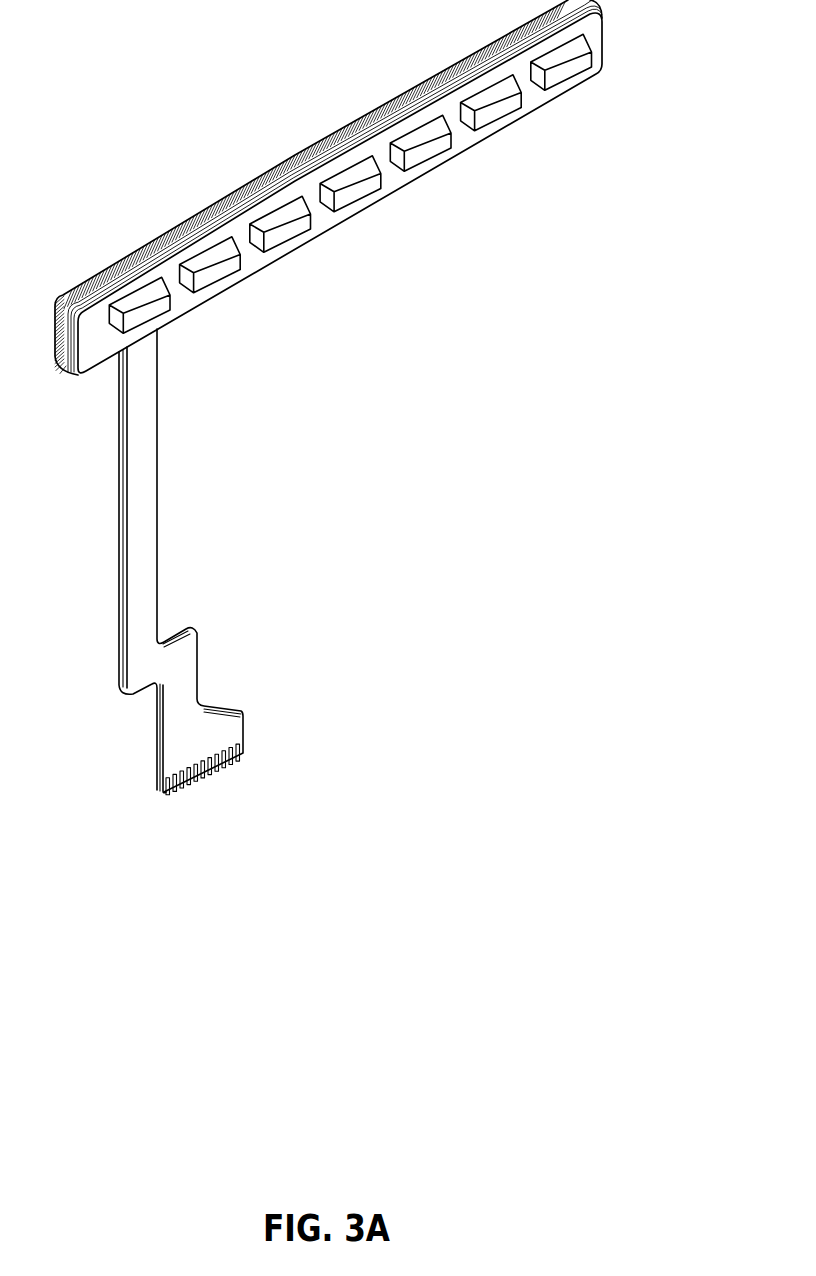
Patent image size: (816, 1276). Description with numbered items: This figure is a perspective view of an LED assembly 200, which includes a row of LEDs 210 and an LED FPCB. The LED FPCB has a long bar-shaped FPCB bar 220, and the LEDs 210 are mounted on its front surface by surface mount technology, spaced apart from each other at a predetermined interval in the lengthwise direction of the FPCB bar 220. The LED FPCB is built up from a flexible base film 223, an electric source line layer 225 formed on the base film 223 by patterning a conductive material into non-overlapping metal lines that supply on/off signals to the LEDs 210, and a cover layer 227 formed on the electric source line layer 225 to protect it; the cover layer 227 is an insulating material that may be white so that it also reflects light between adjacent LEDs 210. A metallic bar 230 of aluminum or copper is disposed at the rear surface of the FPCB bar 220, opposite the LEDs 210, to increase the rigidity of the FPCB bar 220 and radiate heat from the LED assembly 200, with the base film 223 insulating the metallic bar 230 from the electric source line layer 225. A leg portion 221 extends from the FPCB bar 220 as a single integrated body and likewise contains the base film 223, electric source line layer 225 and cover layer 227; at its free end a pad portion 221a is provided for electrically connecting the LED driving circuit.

The LED assembly 200 is at (207, 85).
The LEDs 210 is at (430, 152).
The FPCB bar 220 is at (387, 180).
The leg portion 221 is at (142, 528).
The pad portion 221a is at (223, 767).
The flexible base film 223 is at (121, 418).
The electric source line layer 225 is at (123, 436).
The cover layer 227 is at (127, 468).
The metallic bar 230 is at (318, 145).